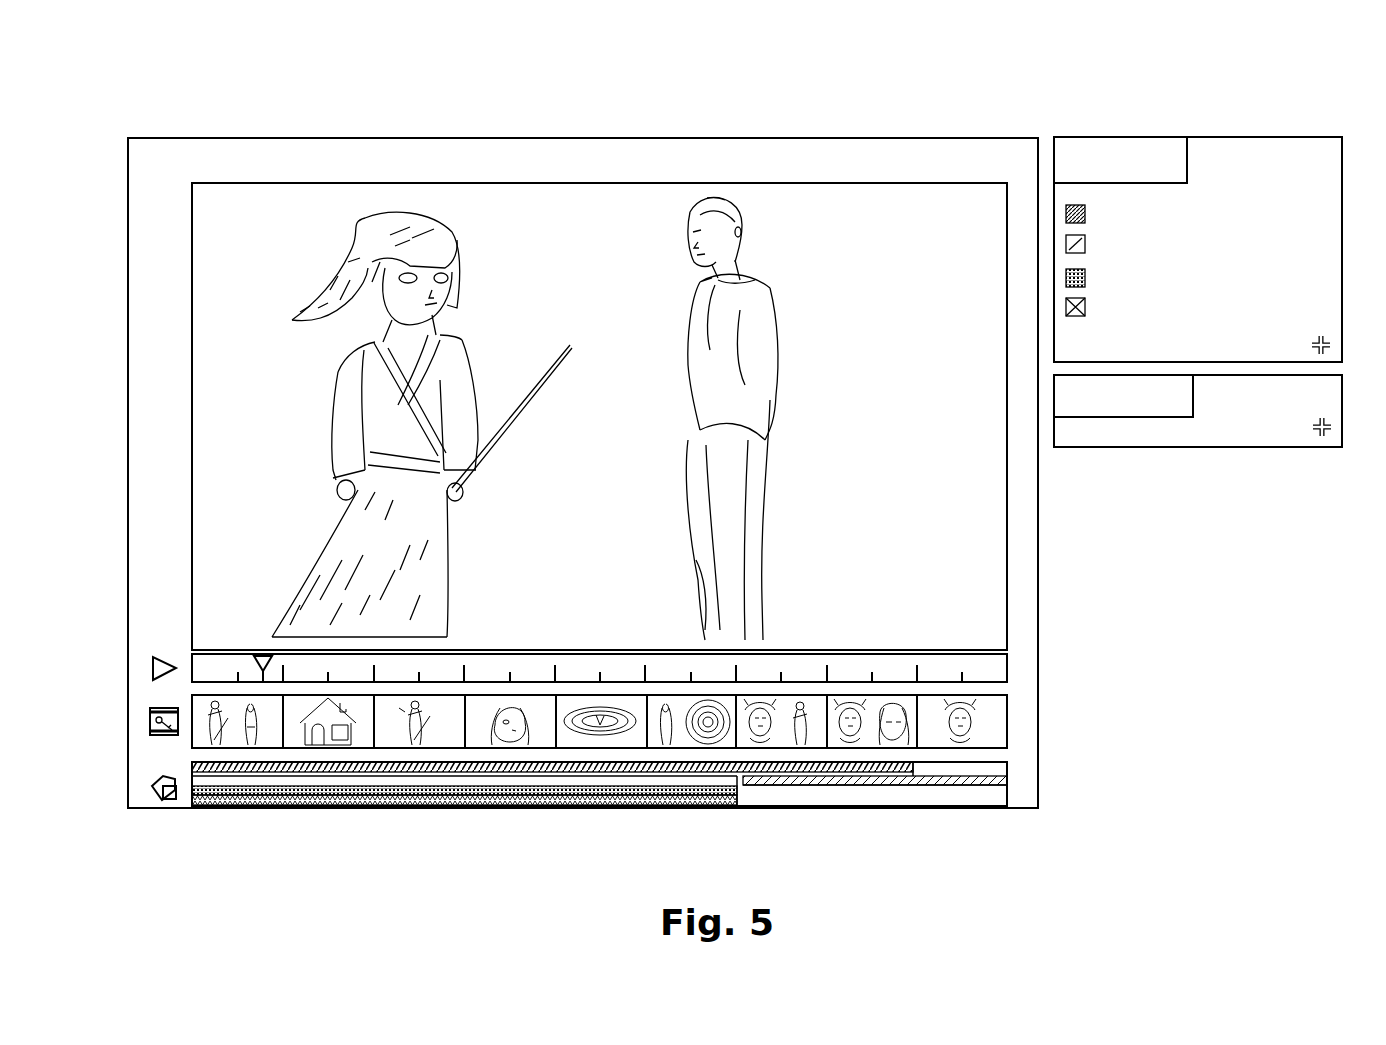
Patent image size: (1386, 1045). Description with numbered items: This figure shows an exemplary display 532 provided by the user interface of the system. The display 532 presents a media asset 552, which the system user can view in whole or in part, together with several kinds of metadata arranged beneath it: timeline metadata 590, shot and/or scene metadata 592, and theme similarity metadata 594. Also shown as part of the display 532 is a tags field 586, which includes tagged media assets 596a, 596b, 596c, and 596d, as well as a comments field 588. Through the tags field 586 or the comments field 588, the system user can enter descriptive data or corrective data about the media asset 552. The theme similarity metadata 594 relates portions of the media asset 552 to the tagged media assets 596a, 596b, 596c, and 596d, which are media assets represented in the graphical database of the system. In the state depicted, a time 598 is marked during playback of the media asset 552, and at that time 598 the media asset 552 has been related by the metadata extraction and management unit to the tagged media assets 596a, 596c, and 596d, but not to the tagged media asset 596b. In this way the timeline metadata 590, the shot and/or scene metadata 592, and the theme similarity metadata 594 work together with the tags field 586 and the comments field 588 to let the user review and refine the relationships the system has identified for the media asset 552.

The display 532 is at (1247, 78).
The media asset 552 is at (552, 137).
The tags field 586 is at (1113, 137).
The comments field 588 is at (1150, 447).
The timeline metadata 590 is at (1008, 664).
The shot and/or scene metadata 592 is at (1008, 722).
The theme similarity metadata 594 is at (1008, 784).
The tagged media asset 596a is at (1204, 211).
The tagged media asset 596b is at (1207, 236).
The tagged media asset 596c is at (1207, 275).
The tagged media asset 596d is at (1207, 303).
The time 598 is at (258, 665).